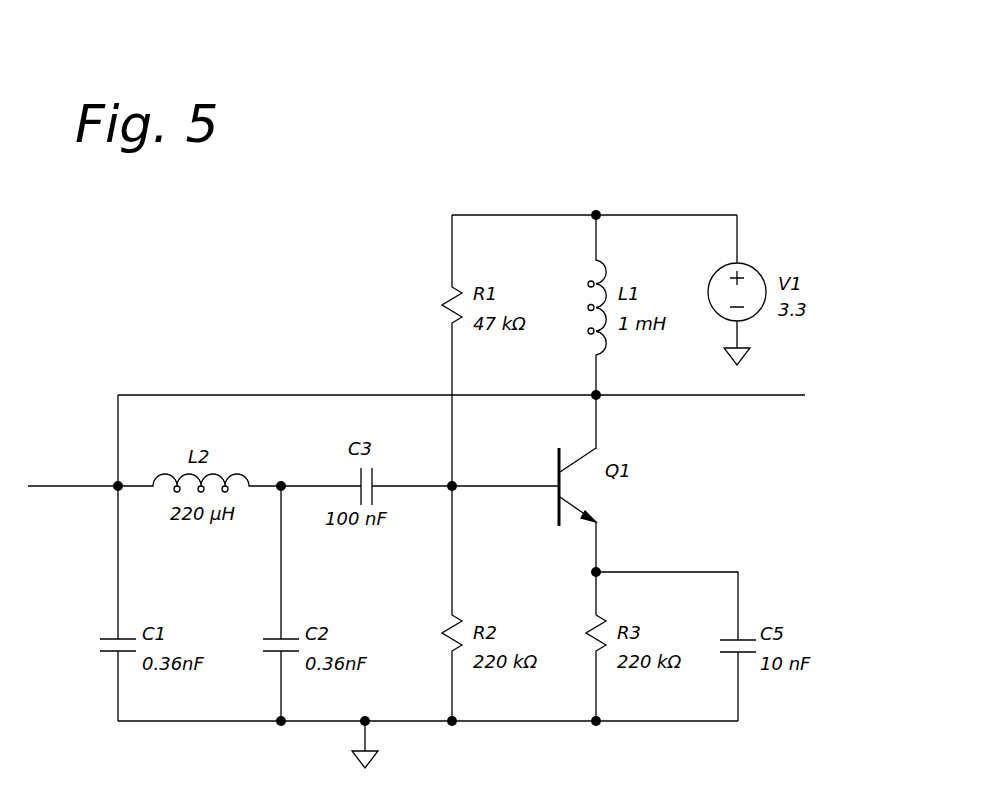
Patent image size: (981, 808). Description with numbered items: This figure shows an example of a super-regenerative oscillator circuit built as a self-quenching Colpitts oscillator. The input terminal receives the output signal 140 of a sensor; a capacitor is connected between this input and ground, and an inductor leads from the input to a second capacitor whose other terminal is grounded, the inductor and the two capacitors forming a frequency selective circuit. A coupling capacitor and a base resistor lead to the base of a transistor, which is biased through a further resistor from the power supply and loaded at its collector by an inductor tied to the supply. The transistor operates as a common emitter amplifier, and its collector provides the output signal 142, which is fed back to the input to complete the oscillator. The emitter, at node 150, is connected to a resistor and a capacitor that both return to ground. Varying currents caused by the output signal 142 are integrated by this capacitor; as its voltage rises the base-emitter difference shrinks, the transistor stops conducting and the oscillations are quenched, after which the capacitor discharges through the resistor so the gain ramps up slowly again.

The output signal of sensor 140 is at (58, 484).
The output signal 142 is at (784, 396).
The emitter output node 150 is at (599, 570).